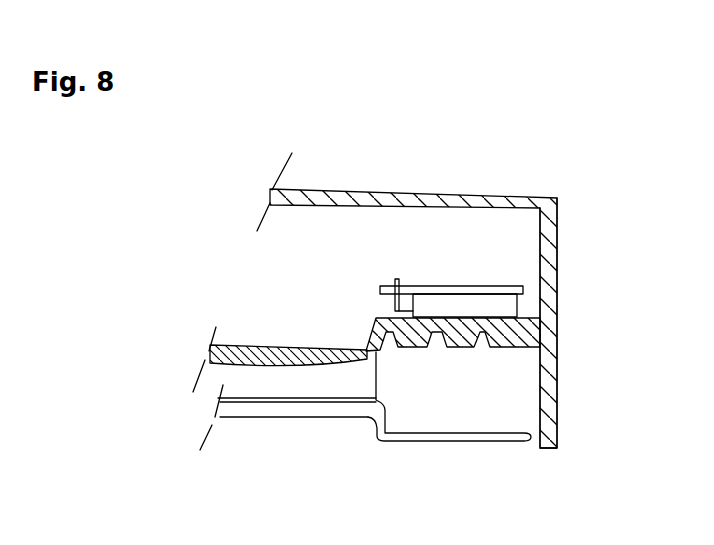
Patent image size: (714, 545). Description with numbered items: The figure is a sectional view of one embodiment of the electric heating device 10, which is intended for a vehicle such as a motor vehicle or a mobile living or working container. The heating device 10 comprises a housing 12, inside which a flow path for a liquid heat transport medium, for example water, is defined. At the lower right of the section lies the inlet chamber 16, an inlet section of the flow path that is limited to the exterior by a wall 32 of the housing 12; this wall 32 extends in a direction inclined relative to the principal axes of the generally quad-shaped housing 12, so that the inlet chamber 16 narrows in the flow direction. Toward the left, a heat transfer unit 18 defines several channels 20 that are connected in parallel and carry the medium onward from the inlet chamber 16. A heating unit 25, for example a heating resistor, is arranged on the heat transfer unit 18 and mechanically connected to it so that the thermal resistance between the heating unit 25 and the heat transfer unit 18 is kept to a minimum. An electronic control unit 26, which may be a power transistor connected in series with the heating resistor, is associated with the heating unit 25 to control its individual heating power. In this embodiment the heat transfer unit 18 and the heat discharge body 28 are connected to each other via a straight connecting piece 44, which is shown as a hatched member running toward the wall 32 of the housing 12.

The electric heating device 10 is at (391, 87).
The housing 12 is at (557, 232).
The wall 32 is at (557, 258).
The electronic control unit 26 is at (432, 312).
The straight connecting piece 44 is at (373, 338).
The heat discharge body 28 is at (457, 349).
The heating unit 25 is at (257, 347).
The heat transfer unit 18 is at (281, 364).
The channel 20 is at (340, 383).
The inlet chamber 16 is at (501, 413).